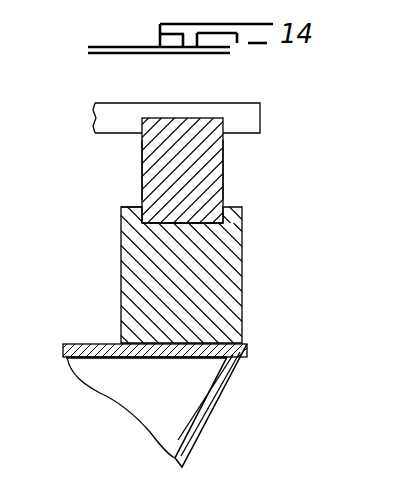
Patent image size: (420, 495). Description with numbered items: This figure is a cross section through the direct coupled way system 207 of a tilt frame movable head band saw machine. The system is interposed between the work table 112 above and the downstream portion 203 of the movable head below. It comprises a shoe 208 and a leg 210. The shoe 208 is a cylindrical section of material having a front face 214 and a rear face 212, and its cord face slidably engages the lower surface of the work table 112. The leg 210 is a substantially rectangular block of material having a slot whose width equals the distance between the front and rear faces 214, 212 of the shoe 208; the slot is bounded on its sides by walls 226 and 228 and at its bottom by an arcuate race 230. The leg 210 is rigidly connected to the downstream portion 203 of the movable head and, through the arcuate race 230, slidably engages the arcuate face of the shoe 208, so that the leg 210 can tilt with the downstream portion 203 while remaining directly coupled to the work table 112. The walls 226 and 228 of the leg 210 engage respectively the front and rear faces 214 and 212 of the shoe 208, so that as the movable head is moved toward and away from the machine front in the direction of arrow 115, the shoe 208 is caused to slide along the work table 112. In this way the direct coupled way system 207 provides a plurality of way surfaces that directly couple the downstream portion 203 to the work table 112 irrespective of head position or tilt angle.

The arrow 115 is at (218, 92).
The work table 112 is at (242, 110).
The shoe 208 is at (213, 162).
The rear face 212 is at (143, 173).
The front face 214 is at (225, 183).
The direct coupled way system 207 is at (267, 200).
The wall 226 is at (137, 210).
The wall 228 is at (240, 215).
The arcuate race 230 is at (176, 223).
The leg 210 is at (225, 257).
The downstream portion 203 is at (227, 393).